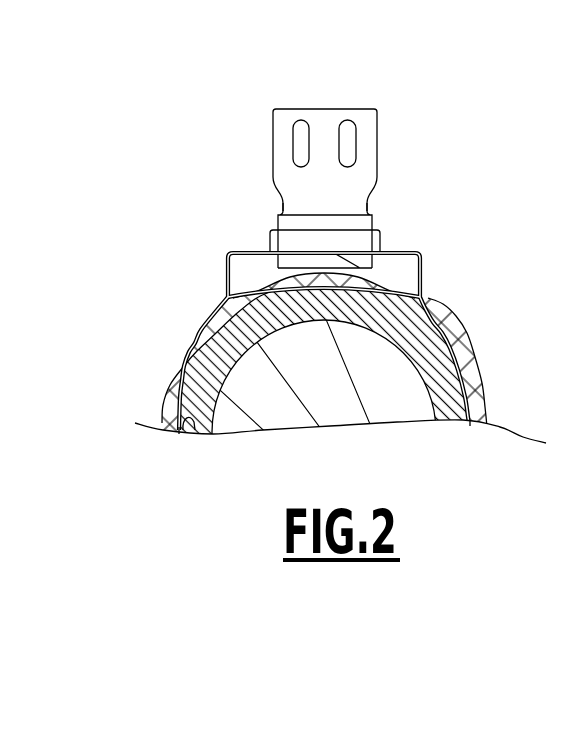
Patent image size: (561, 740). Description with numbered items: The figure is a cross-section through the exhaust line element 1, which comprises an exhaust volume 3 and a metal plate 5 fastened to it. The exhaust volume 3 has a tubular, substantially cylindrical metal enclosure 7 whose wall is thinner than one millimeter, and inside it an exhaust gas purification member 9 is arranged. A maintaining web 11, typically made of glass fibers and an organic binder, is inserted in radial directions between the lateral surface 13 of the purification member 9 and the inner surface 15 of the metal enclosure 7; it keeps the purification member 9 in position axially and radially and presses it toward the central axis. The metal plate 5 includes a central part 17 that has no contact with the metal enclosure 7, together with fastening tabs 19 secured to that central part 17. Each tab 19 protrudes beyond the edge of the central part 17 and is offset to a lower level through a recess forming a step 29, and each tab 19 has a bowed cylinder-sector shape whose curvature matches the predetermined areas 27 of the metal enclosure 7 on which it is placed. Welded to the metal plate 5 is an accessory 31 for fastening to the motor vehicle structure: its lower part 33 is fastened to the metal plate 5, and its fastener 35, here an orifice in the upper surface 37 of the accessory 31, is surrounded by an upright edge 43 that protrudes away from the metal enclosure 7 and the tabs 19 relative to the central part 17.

The exhaust line element 1 is at (199, 184).
The exhaust volume 3 is at (164, 458).
The metal plate 5 is at (193, 275).
The metal enclosure 7 is at (467, 383).
The exhaust gas purification member 9 is at (335, 400).
The maintaining web 11 is at (450, 392).
The lateral surface 13 is at (222, 437).
The inner surface 15 is at (190, 433).
The central part 17 is at (365, 268).
The fastening tabs 19 is at (212, 311).
The predetermined areas 27 is at (190, 340).
The step 29 is at (227, 288).
The accessory 31 is at (416, 130).
The lower part 33 is at (283, 222).
The fastener 35 is at (302, 142).
The upper surface 37 is at (323, 132).
The upright edge 43 is at (345, 238).